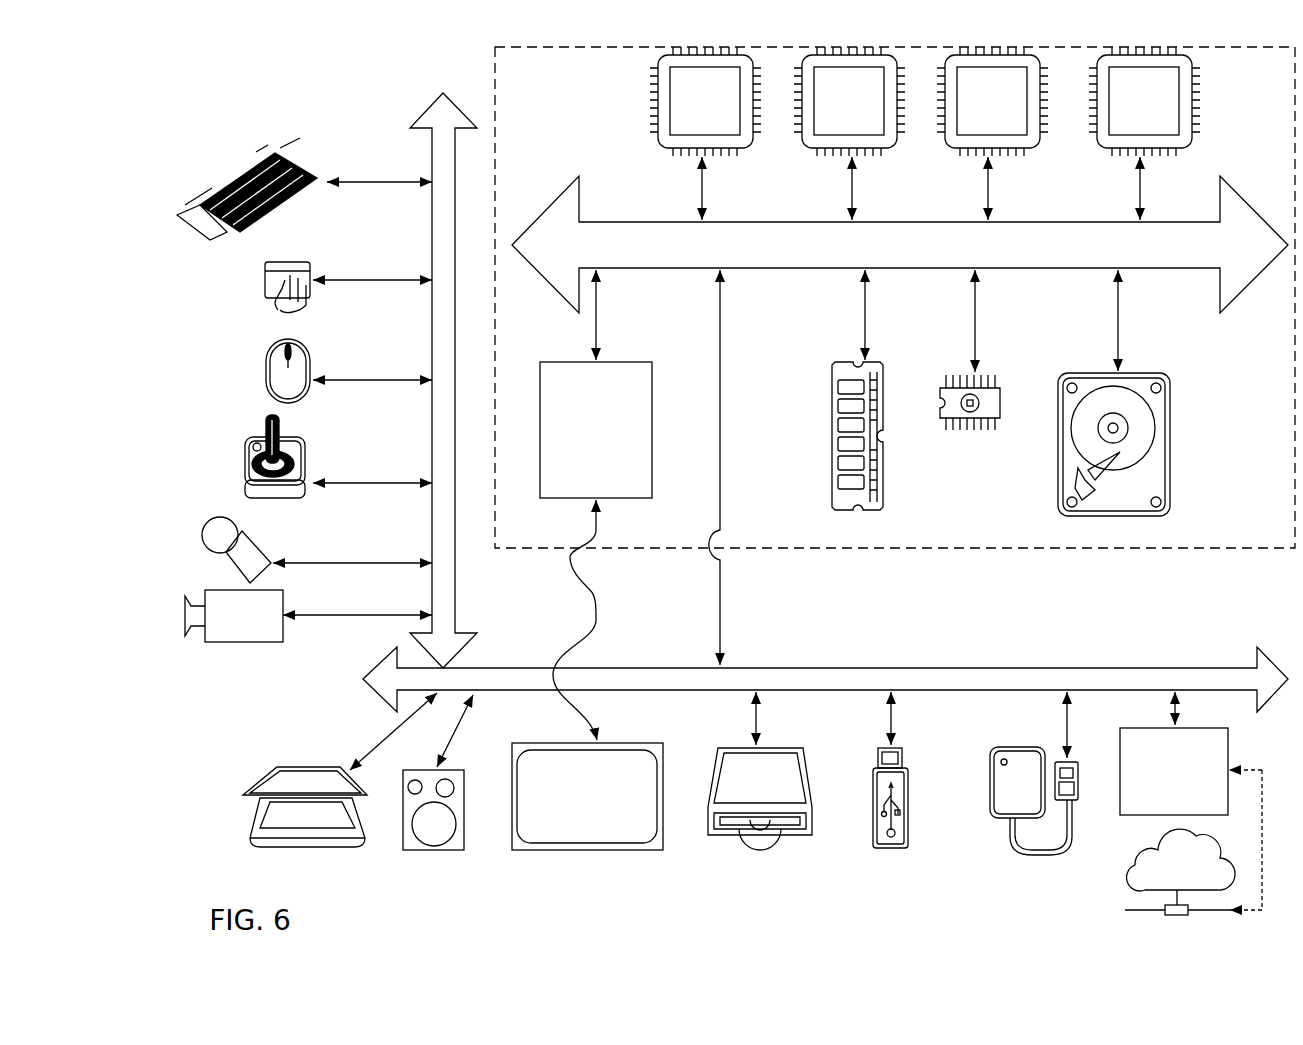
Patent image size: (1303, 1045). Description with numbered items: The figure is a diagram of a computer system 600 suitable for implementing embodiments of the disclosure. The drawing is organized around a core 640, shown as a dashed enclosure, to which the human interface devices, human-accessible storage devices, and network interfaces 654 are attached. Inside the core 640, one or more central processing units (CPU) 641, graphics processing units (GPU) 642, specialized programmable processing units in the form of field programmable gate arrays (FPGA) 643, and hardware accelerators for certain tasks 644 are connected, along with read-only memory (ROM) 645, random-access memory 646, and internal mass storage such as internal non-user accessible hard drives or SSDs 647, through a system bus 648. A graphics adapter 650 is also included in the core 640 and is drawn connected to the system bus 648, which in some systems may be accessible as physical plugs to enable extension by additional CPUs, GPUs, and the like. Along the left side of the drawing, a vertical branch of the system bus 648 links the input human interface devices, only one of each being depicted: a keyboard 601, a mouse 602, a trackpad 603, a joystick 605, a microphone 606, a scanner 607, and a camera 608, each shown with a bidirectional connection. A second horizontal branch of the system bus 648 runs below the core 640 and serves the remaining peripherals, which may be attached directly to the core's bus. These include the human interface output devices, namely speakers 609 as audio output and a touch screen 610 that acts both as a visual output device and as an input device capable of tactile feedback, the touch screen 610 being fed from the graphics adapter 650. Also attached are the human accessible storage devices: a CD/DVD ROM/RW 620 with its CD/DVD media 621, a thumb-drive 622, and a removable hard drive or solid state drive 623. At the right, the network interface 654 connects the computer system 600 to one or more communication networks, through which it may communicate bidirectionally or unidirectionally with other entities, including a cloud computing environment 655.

The computer system 600 is at (236, 94).
The keyboard 601 is at (178, 212).
The mouse 602 is at (258, 372).
The trackpad 603 is at (258, 290).
The joystick 605 is at (243, 482).
The microphone 606 is at (202, 535).
The scanner 607 is at (250, 830).
The camera 608 is at (185, 615).
The speakers 609 is at (437, 852).
The touch screen 610 is at (582, 851).
The CD/DVD ROM/RW 620 is at (797, 842).
The CD/DVD media 621 is at (740, 848).
The thumb-drive 622 is at (888, 850).
The removable hard drive or solid state drive 623 is at (995, 822).
The core 640 is at (918, 548).
The central processing unit 641 is at (687, 126).
The graphics processing unit 642 is at (831, 126).
The field programmable gate array 643 is at (974, 126).
The hardware accelerator 644 is at (1126, 126).
The read-only memory 645 is at (958, 432).
The random-access memory 646 is at (832, 432).
The internal mass storage 647 is at (1075, 373).
The system bus 648 is at (990, 256).
The graphics adapter 650 is at (596, 505).
The network interface 654 is at (1174, 753).
The cloud computing environment 655 is at (1127, 870).